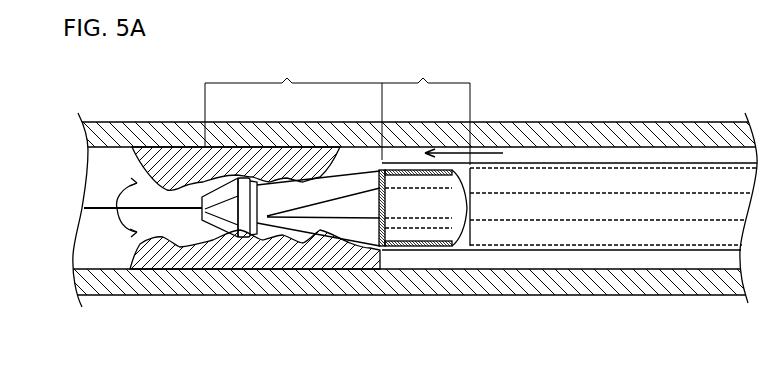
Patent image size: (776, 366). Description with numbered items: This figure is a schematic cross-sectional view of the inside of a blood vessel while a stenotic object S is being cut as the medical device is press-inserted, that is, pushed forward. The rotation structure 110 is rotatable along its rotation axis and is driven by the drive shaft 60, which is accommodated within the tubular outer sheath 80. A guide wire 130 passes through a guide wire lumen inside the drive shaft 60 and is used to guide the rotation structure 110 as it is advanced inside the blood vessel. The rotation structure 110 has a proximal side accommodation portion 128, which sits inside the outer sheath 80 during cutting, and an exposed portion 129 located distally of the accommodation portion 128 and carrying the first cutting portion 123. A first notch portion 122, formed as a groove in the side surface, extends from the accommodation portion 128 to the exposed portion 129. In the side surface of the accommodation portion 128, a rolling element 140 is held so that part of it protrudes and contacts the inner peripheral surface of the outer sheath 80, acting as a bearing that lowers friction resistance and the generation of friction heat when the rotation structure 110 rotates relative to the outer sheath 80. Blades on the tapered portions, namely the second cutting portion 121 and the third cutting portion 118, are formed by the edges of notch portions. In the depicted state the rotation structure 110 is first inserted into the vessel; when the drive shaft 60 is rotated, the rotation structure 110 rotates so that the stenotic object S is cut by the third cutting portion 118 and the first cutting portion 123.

The stenotic object S is at (163, 263).
The drive shaft 60 is at (633, 223).
The outer sheath 80 is at (523, 250).
The rotation structure 110 is at (361, 240).
The third cutting portion 118 is at (216, 238).
The second cutting portion 121 is at (257, 238).
The first notch portion 122 is at (322, 237).
The first cutting portion 123 is at (340, 212).
The accommodation portion 128 is at (426, 112).
The exposed portion 129 is at (293, 110).
The guide wire 130 is at (100, 207).
The rolling element 140 is at (428, 248).